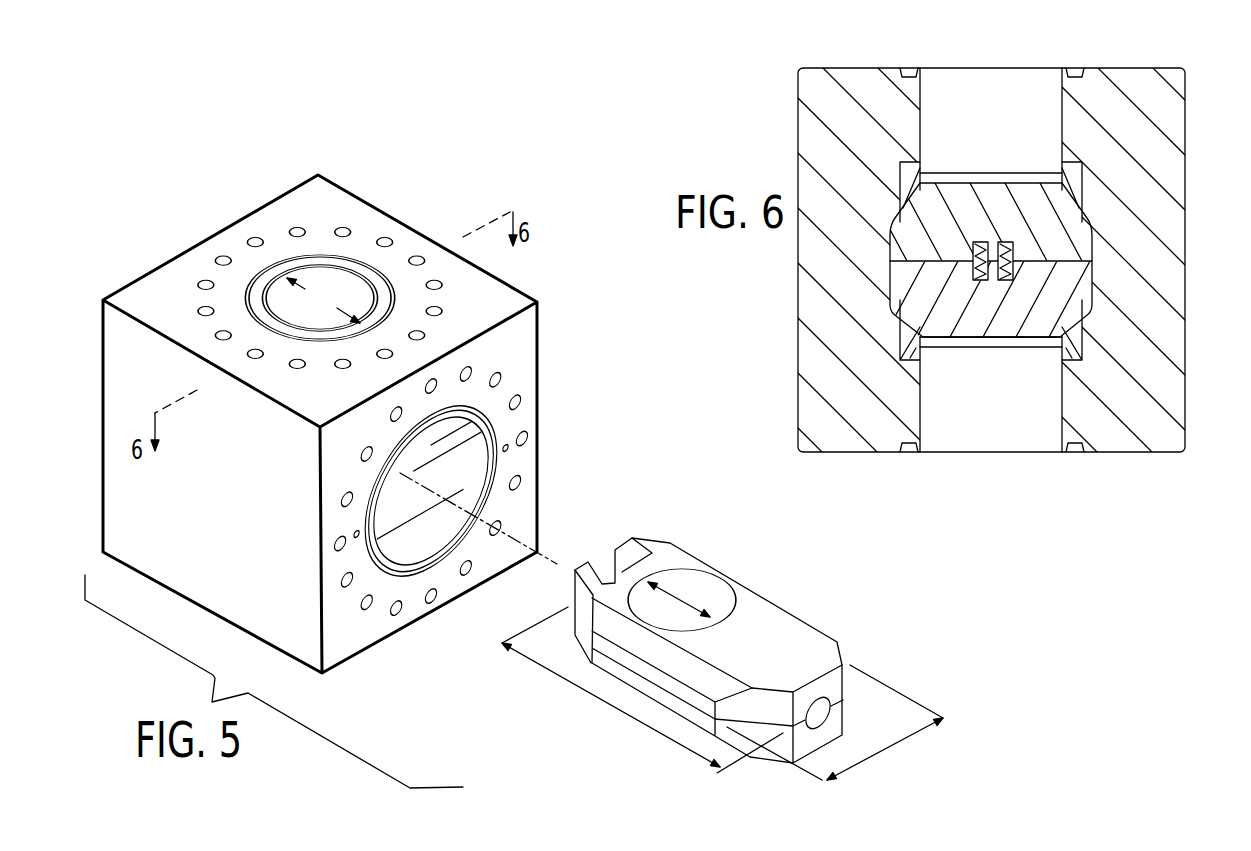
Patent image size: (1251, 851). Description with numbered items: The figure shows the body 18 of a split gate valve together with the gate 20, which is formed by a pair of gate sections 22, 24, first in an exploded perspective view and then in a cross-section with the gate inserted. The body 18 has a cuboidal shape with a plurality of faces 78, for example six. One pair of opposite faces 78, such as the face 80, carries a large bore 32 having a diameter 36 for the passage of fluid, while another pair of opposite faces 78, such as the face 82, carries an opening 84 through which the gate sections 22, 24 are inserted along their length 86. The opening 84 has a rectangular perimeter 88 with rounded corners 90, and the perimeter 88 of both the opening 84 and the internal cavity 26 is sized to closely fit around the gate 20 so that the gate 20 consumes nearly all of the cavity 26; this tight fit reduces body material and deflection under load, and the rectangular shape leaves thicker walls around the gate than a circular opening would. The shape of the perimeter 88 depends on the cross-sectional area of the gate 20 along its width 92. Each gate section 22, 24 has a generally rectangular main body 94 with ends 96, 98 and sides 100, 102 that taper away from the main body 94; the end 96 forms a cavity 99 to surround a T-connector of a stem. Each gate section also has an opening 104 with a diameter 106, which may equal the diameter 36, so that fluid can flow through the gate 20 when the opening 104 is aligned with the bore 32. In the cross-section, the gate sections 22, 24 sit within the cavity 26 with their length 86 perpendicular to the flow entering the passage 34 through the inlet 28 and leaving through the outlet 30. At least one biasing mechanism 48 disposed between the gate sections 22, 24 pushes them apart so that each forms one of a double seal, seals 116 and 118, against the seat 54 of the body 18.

In FIG. 5, the body 18 is at (517, 283).
In FIG. 6, the body 18 is at (1185, 337).
In FIG. 5, the gate 20 is at (837, 625).
In FIG. 6, the gate 20 is at (1103, 323).
In FIG. 5, the gate section 22 is at (683, 712).
In FIG. 6, the gate section 22 is at (908, 277).
In FIG. 5, the gate section 24 is at (667, 687).
In FIG. 6, the gate section 24 is at (913, 230).
In FIG. 5, the cavity 26 is at (462, 485).
In FIG. 6, the cavity 26 is at (1093, 283).
In FIG. 6, the inlet 28 is at (957, 68).
In FIG. 6, the outlet 30 is at (1003, 453).
In FIG. 5, the bore 32 is at (350, 262).
In FIG. 6, the bore 32 is at (1020, 68).
In FIG. 6, the passage 34 is at (990, 98).
In FIG. 5, the diameter 36 is at (323, 300).
In FIG. 6, the biasing mechanism 48 is at (1005, 240).
In FIG. 6, the seat 54 is at (902, 203).
In FIG. 5, the faces 78 is at (140, 287).
In FIG. 5, the face 80 is at (347, 193).
In FIG. 5, the face 82 is at (533, 410).
In FIG. 5, the opening 84 is at (420, 530).
In FIG. 6, the opening 84 is at (1090, 222).
In FIG. 5, the length 86 is at (610, 703).
In FIG. 5, the perimeter 88 is at (360, 533).
In FIG. 6, the perimeter 88 is at (1097, 245).
In FIG. 5, the rounded corners 90 is at (397, 492).
In FIG. 5, the width 92 is at (877, 747).
In FIG. 5, the main body 94 is at (797, 627).
In FIG. 5, the end 96 is at (628, 542).
In FIG. 5, the end 98 is at (840, 690).
In FIG. 5, the cavity 99 is at (610, 570).
In FIG. 5, the side 100 is at (597, 617).
In FIG. 5, the side 102 is at (840, 678).
In FIG. 5, the opening 104 is at (723, 593).
In FIG. 5, the diameter 106 is at (650, 583).
In FIG. 6, the seal 116 is at (980, 240).
In FIG. 6, the seal 118 is at (970, 340).